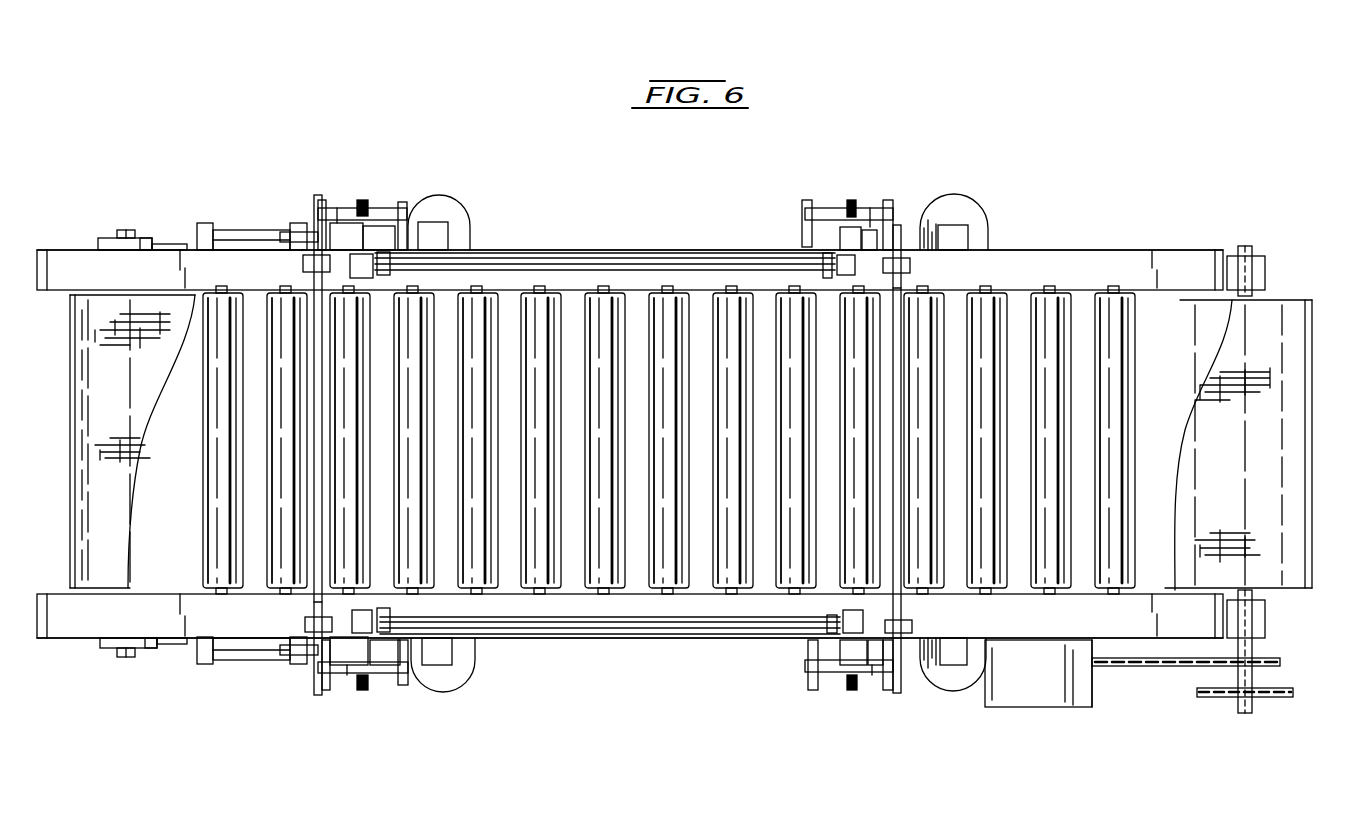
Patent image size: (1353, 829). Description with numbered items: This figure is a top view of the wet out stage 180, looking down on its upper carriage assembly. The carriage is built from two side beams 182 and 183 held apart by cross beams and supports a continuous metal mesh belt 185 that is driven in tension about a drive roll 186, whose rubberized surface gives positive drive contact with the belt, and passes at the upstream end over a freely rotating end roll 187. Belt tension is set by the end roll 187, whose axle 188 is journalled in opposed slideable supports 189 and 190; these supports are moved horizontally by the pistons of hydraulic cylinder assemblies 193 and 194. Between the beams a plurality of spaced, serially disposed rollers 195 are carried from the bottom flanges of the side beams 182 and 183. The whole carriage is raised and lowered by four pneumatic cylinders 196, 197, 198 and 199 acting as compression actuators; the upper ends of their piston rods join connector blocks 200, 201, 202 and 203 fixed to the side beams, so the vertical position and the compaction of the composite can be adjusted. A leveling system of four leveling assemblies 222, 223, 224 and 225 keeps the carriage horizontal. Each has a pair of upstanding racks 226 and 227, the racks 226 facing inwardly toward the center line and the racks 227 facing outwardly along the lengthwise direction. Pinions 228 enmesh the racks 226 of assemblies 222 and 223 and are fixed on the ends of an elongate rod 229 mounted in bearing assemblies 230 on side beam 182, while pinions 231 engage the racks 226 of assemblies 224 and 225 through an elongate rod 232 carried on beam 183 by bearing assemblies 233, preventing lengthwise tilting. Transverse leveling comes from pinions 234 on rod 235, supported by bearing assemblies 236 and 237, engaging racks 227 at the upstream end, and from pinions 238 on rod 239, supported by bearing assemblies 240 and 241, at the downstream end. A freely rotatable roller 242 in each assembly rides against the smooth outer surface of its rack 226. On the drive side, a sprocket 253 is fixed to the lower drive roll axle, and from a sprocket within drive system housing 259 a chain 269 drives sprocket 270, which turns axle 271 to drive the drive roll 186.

The wet out stage 180 is at (1082, 150).
The side beam 182 is at (667, 640).
The side beam 183 is at (680, 253).
The continuous belt 185 is at (105, 352).
The drive roll 186 is at (1288, 300).
The end roll 187 is at (150, 520).
The axle 188 is at (112, 238).
The slideable support 189 is at (148, 650).
The slideable support 190 is at (145, 245).
The hydraulic cylinder assembly 193 is at (245, 654).
The hydraulic cylinder assembly 194 is at (248, 228).
The rollers 195 is at (510, 320).
The pneumatic cylinder 196 is at (452, 684).
The pneumatic cylinder 197 is at (950, 690).
The pneumatic cylinder 198 is at (440, 210).
The pneumatic cylinder 199 is at (965, 212).
The connector block 200 is at (440, 652).
The connector block 201 is at (957, 662).
The connector block 202 is at (430, 240).
The connector block 203 is at (958, 242).
The leveling assembly 222 is at (370, 748).
The leveling assembly 223 is at (870, 738).
The leveling assembly 224 is at (367, 166).
The leveling assembly 225 is at (865, 185).
The rack 226 is at (368, 222).
The rack 227 is at (337, 205).
The pinion 228 is at (840, 617).
The elongate rod 229 is at (595, 636).
The bearing assembly 230 is at (400, 618).
The pinion 231 is at (378, 232).
The elongate rod 232 is at (610, 266).
The bearing assembly 233 is at (380, 272).
The pinion 234 is at (314, 238).
The elongate rod 235 is at (305, 602).
The bearing assembly 236 is at (306, 624).
The bearing assembly 237 is at (303, 264).
The pinion 238 is at (903, 238).
The elongate rod 239 is at (903, 288).
The bearing assembly 240 is at (905, 624).
The bearing assembly 241 is at (908, 265).
The roller 242 is at (362, 200).
The sprocket 253 is at (1260, 695).
The drive system housing 259 is at (1060, 700).
The chain 269 is at (1135, 666).
The drive sprocket 270 is at (1283, 663).
The axle 271 is at (1258, 652).